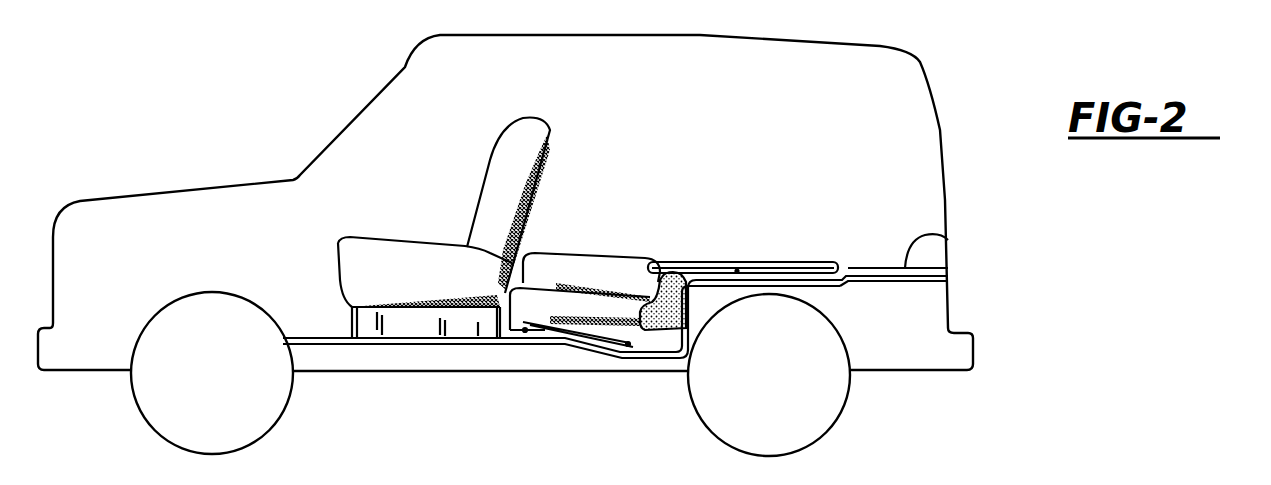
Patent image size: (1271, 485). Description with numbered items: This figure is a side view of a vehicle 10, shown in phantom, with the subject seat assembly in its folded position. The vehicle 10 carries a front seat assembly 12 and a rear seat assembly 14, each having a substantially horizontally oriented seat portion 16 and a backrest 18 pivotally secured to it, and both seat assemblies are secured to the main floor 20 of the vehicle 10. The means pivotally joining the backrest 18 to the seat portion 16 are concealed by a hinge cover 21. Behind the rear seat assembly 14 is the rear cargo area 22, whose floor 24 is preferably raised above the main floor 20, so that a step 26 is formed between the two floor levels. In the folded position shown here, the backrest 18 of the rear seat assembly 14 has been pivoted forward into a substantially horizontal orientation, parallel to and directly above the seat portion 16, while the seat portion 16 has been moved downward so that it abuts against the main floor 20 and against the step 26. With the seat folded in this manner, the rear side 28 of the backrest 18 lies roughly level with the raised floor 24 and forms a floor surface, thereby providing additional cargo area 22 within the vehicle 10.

The vehicle 10 is at (943, 143).
The front seat assembly 12 is at (557, 120).
The rear seat assembly 14 is at (650, 253).
The seat portion 16 is at (373, 238).
The backrest 18 is at (490, 170).
The main floor 20 is at (310, 337).
The hinge cover 21 is at (690, 320).
The rear cargo area 22 is at (790, 177).
The cargo area floor 24 is at (950, 237).
The step 26 is at (693, 292).
The rear side of backrest 28 is at (617, 260).